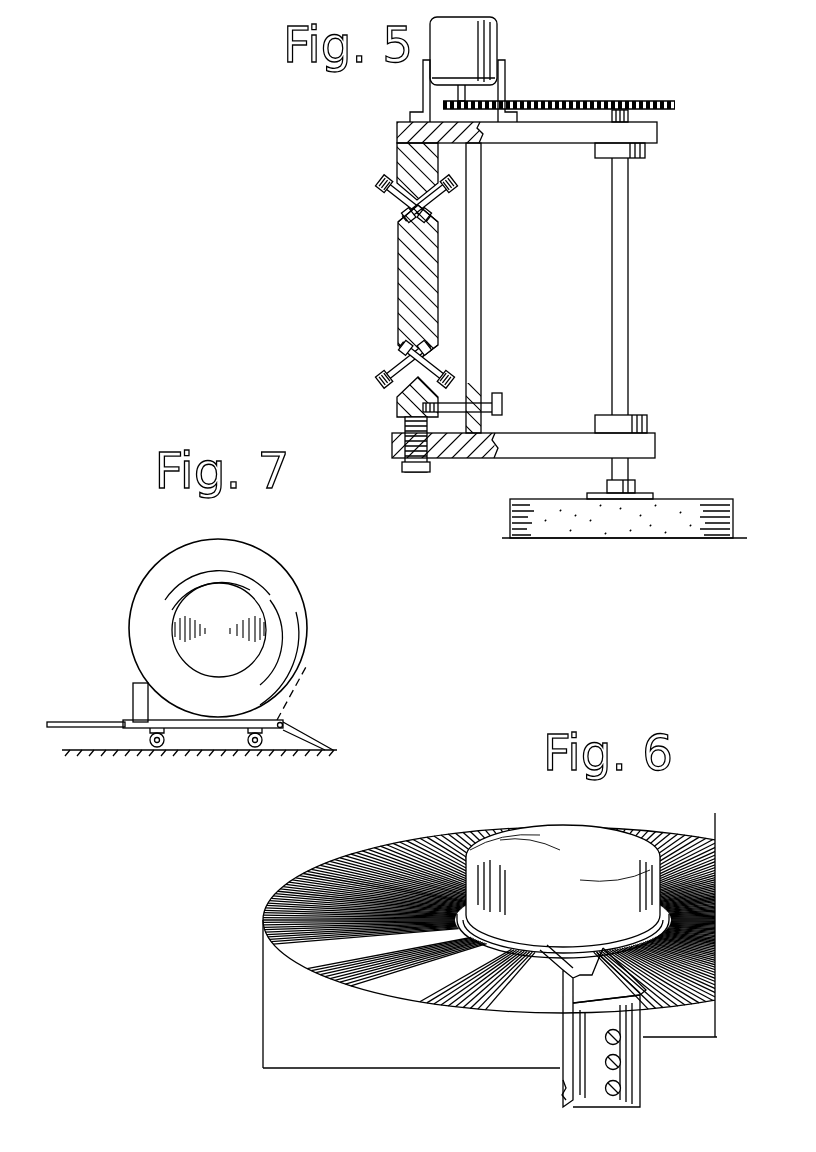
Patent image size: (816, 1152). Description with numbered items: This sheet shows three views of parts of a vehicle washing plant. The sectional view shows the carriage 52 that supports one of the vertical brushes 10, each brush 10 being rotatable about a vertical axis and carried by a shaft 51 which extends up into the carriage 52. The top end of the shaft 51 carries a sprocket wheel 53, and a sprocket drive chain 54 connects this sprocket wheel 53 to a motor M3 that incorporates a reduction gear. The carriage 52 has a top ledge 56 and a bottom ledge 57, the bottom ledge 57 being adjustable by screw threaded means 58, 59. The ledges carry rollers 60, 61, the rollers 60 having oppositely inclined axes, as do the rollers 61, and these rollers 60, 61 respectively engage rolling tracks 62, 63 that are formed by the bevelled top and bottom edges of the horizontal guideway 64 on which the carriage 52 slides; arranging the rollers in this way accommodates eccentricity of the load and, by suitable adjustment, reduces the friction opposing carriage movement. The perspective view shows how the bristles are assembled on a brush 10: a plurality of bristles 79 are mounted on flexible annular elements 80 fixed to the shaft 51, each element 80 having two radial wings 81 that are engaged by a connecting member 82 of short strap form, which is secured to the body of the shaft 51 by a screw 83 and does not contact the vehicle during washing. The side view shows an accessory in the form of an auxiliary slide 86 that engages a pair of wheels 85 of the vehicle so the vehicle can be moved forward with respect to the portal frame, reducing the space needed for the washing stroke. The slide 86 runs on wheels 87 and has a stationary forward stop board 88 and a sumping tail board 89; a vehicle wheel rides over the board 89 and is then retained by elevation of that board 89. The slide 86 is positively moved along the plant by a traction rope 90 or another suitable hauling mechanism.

In FIG. 5, the motor M3 is at (500, 40).
In FIG. 5, the sprocket drive chain 54 is at (542, 101).
In FIG. 5, the sprocket wheel 53 is at (634, 101).
In FIG. 5, the carriage 52 is at (659, 150).
In FIG. 5, the top ledge 56 is at (410, 165).
In FIG. 5, the rollers 60 is at (395, 200).
In FIG. 5, the rolling track 62 is at (410, 213).
In FIG. 5, the guideway 64 is at (410, 272).
In FIG. 5, the rolling track 63 is at (400, 350).
In FIG. 5, the rollers 61 is at (393, 376).
In FIG. 5, the bottom ledge 57 is at (397, 406).
In FIG. 5, the screw threaded means 59 is at (476, 405).
In FIG. 5, the screw threaded means 58 is at (392, 446).
In FIG. 5, the shaft 51 is at (628, 255).
In FIG. 6, the shaft 51 is at (548, 835).
In FIG. 5, the brush 10 is at (690, 500).
In FIG. 6, the brush 10 is at (675, 810).
In FIG. 7, the wheels 85 is at (150, 595).
In FIG. 7, the stationary forward stop board 88 is at (140, 695).
In FIG. 7, the auxiliary slide 86 is at (185, 735).
In FIG. 7, the wheels 87 is at (262, 745).
In FIG. 7, the traction rope 90 is at (52, 722).
In FIG. 7, the sumping tail board 89 is at (298, 732).
In FIG. 6, the bristles 79 is at (330, 890).
In FIG. 6, the flexible annular elements 80 is at (536, 956).
In FIG. 6, the radial wings 81 is at (580, 962).
In FIG. 6, the connecting member 82 is at (642, 1028).
In FIG. 6, the screw 83 is at (621, 1087).